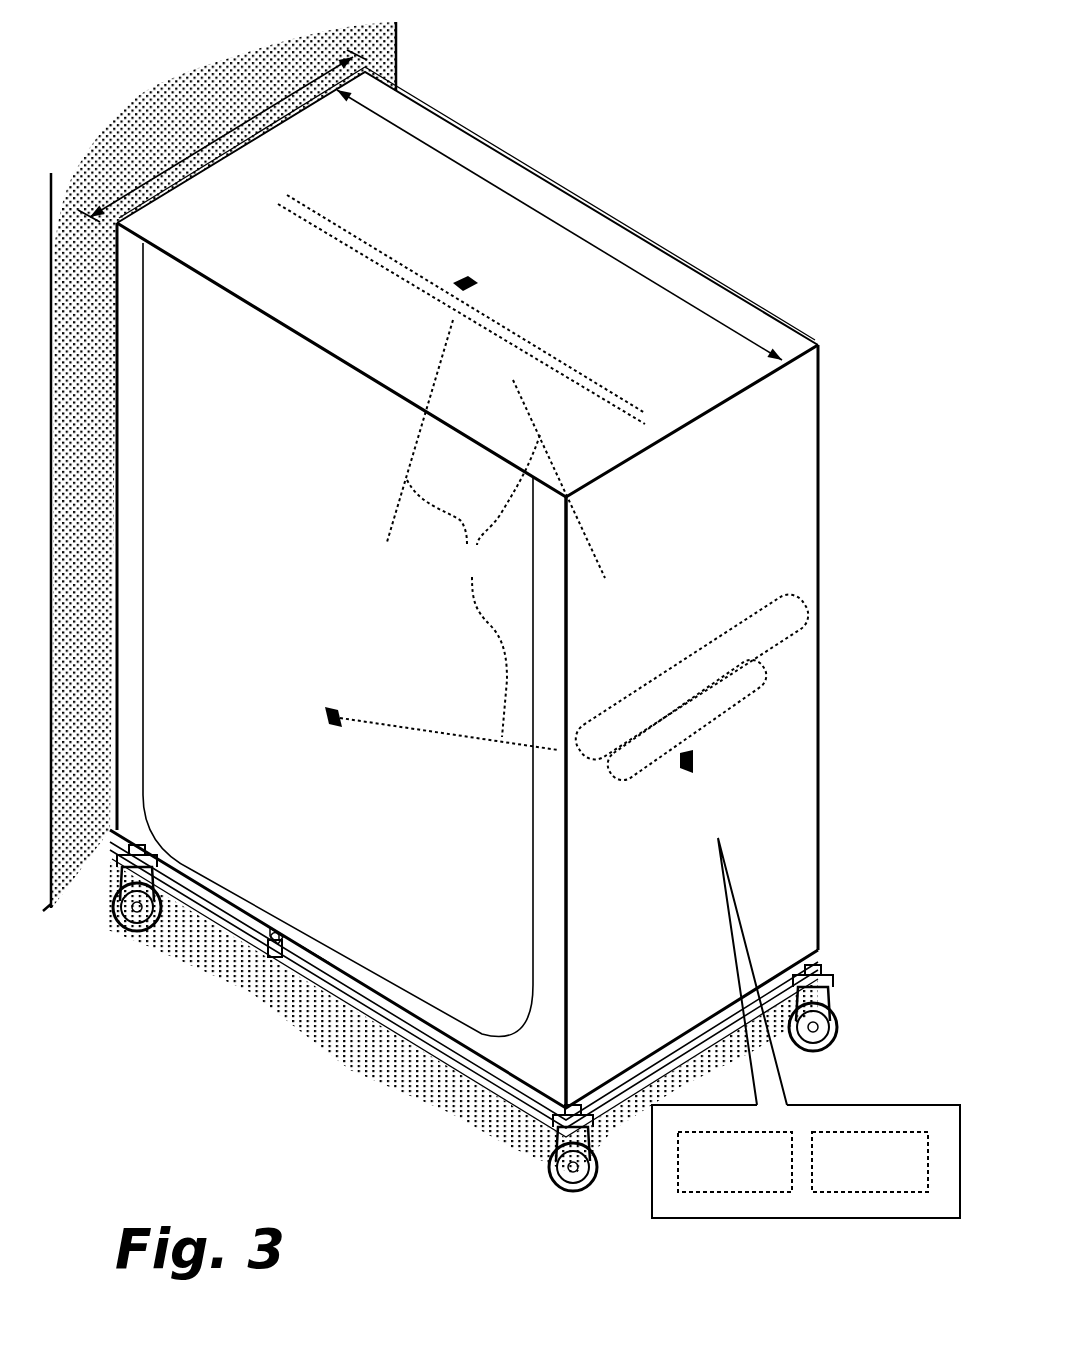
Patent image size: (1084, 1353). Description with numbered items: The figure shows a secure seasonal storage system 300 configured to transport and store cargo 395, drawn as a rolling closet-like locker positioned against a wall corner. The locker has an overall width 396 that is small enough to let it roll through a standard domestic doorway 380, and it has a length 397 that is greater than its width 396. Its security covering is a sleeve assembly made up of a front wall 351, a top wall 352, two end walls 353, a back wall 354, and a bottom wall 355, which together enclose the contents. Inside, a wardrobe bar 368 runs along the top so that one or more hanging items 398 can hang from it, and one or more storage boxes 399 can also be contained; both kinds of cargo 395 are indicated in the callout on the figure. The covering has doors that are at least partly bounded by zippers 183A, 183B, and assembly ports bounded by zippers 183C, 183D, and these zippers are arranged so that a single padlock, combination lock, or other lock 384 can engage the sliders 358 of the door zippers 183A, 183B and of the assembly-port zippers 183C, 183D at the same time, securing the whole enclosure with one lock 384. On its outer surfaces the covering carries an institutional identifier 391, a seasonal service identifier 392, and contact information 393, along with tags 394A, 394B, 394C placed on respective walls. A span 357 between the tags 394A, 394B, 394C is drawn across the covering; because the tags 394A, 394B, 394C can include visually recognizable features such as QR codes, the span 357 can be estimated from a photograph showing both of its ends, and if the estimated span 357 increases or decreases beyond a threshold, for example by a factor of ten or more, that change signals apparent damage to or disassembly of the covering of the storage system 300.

The secure seasonal storage system 300 is at (832, 210).
The front wall 351 is at (520, 1060).
The top wall 352 is at (262, 266).
The end wall 353 is at (796, 896).
The back wall 354 is at (646, 232).
The bottom wall 355 is at (421, 1050).
The span 357 is at (472, 535).
The slider 358 is at (285, 930).
The wardrobe bar 368 is at (390, 267).
The standard domestic doorway 380 is at (76, 488).
The lock 384 is at (273, 962).
The institutional identifier 391 is at (783, 521).
The seasonal service identifier 392 is at (812, 605).
The contact information 393 is at (765, 683).
The tag 394A is at (695, 762).
The tag 394B is at (478, 283).
The tag 394C is at (335, 728).
The cargo 395 is at (773, 1049).
The overall width 396 is at (222, 136).
The length 397 is at (559, 225).
The hanging item 398 is at (735, 1162).
The storage box 399 is at (870, 1162).
The zipper 183A is at (212, 920).
The zipper 183B is at (368, 972).
The zipper 183C is at (212, 920).
The zipper 183D is at (350, 975).